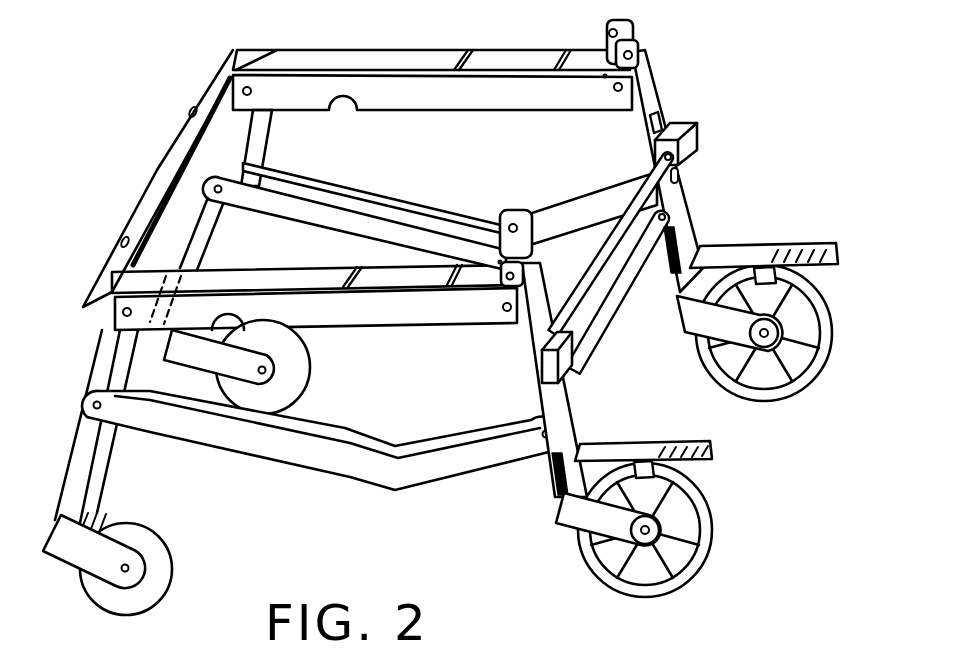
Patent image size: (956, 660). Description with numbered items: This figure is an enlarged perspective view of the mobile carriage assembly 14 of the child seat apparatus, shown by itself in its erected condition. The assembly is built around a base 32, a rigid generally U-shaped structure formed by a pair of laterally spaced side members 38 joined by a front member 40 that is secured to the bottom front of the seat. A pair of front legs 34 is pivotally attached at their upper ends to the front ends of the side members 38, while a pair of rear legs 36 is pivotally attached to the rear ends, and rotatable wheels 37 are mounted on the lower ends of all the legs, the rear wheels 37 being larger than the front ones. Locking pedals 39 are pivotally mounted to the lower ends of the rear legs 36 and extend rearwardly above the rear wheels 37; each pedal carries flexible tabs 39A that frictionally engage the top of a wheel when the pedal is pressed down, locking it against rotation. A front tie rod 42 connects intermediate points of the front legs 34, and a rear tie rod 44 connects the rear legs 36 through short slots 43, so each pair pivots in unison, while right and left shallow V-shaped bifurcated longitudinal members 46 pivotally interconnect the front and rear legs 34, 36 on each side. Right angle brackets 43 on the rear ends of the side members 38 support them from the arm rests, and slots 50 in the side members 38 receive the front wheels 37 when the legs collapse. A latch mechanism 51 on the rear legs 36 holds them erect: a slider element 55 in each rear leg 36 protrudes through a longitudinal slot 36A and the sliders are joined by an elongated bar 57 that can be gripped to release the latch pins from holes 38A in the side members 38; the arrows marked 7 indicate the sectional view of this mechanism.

The section view indicator 7 is at (553, 275).
The mobile carriage assembly 14 is at (692, 46).
The base 32 is at (388, 50).
The front legs 34 is at (261, 147).
The rear legs 36 is at (669, 118).
The longitudinal slot 36A is at (662, 115).
The rotatable wheels 37 is at (167, 573).
The side members 38 is at (418, 100).
The hole 38A is at (605, 76).
The locking pedals 39 is at (767, 246).
The flexible tabs 39A is at (806, 298).
The front member 40 is at (132, 212).
The front tie rod 42 is at (185, 250).
The right angle brackets and short slots 43 is at (633, 27).
The rear tie rod 44 is at (615, 296).
The longitudinal bifurcated members 46 is at (445, 213).
The slots 50 is at (462, 60).
The latch mechanism 51 is at (699, 155).
The slider element 55 is at (697, 140).
The elongated bar 57 is at (627, 213).